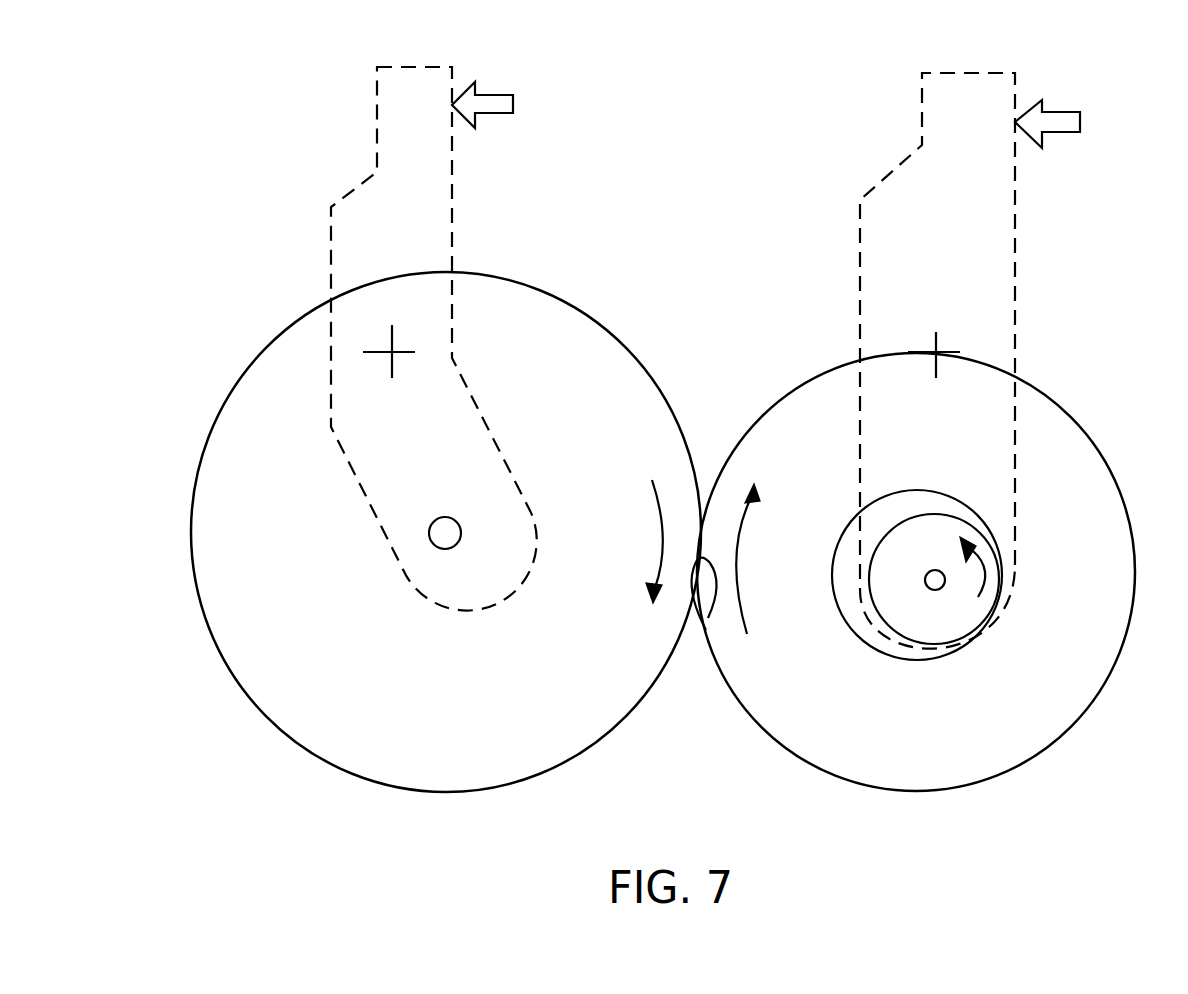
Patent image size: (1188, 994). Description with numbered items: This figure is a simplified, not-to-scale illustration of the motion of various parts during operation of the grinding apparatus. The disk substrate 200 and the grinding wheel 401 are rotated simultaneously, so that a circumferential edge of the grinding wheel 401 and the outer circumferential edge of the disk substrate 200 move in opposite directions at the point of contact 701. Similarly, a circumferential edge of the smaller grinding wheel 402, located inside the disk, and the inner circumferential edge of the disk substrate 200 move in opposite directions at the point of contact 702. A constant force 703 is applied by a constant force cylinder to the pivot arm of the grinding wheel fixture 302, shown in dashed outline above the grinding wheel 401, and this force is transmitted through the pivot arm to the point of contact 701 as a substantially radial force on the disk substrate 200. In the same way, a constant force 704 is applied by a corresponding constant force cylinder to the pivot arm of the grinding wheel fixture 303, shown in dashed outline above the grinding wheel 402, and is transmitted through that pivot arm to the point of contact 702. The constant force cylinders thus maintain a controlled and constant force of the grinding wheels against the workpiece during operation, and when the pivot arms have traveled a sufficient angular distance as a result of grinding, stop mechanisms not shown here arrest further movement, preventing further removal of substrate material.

The disk substrate 200 is at (920, 766).
The grinding wheel fixture 302 is at (497, 245).
The grinding wheel fixture 303 is at (843, 305).
The grinding wheel 401 is at (470, 768).
The grinding wheel 402 is at (952, 627).
The point of contact 701 is at (708, 618).
The point of contact 702 is at (997, 592).
The constant force 703 is at (513, 104).
The constant force 704 is at (1080, 122).